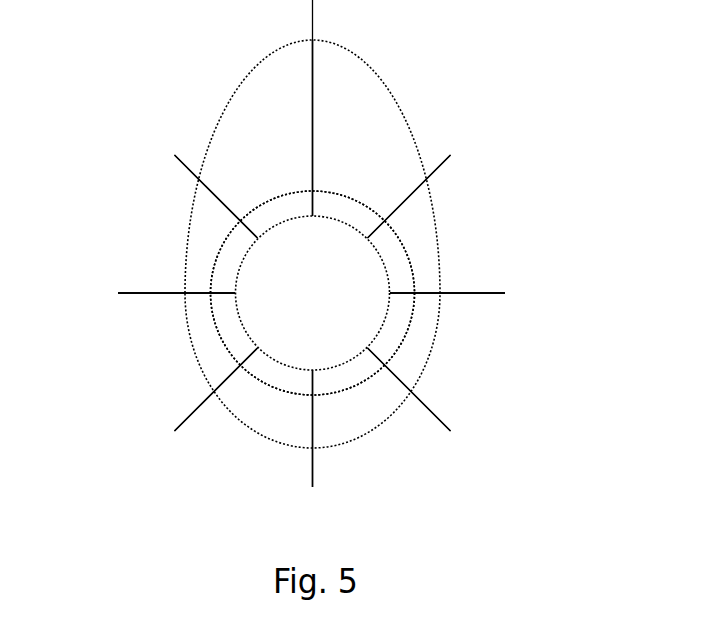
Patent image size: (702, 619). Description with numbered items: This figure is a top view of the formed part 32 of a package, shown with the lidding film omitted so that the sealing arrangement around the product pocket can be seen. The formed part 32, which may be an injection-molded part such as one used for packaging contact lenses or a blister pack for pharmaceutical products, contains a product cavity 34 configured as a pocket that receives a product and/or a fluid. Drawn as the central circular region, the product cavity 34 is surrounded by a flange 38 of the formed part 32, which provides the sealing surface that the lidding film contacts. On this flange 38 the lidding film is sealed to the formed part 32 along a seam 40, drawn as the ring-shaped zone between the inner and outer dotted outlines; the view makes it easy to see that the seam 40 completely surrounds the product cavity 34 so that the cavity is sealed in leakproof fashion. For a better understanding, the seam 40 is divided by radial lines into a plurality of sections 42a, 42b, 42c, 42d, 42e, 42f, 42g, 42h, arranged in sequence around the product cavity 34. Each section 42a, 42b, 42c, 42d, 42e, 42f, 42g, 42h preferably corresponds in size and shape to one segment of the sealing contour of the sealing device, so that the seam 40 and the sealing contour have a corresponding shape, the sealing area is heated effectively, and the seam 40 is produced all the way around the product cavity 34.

The formed part 32 is at (422, 133).
The product cavity 34 is at (265, 313).
The flange 38 is at (418, 233).
The seam 40 is at (212, 265).
The section of the seam 42a is at (365, 150).
The section of the seam 42b is at (465, 271).
The section of the seam 42c is at (437, 346).
The section of the seam 42d is at (355, 400).
The section of the seam 42e is at (273, 403).
The section of the seam 42f is at (200, 370).
The section of the seam 42g is at (157, 222).
The section of the seam 42h is at (241, 160).